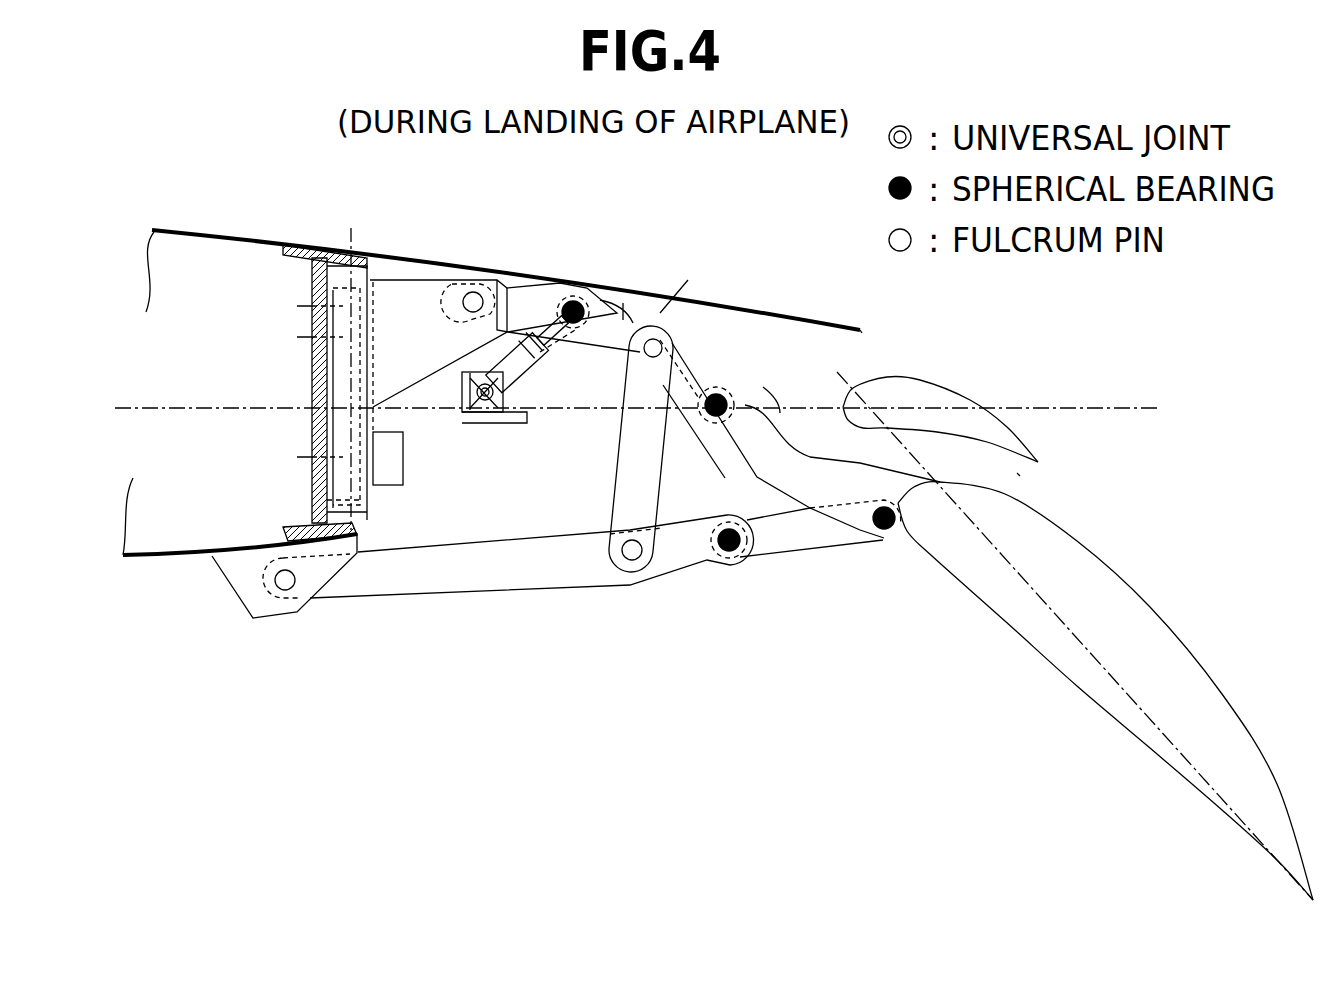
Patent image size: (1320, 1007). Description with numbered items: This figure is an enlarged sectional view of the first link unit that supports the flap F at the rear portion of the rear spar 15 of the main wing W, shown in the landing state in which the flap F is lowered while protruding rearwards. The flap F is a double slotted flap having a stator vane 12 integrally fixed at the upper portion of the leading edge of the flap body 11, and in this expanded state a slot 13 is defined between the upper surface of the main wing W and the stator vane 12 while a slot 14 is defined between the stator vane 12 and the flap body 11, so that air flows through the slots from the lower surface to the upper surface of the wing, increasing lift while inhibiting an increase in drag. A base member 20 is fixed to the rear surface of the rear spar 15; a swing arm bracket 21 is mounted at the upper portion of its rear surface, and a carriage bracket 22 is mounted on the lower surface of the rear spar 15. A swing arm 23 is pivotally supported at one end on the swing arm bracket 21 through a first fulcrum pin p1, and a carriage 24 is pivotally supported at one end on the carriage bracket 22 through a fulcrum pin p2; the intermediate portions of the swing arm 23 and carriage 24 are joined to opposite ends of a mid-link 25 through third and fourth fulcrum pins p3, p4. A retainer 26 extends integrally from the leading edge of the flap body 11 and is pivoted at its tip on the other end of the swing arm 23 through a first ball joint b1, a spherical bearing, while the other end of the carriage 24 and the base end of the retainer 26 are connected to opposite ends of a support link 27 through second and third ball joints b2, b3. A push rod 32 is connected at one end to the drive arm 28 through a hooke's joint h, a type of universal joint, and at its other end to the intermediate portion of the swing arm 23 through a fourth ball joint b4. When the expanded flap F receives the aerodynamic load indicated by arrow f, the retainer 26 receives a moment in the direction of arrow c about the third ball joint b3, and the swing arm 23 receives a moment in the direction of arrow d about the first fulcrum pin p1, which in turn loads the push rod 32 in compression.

The main wing W is at (212, 230).
The flap body 11 is at (1181, 658).
The stator vane 12 is at (947, 397).
The slot 13 is at (850, 352).
The slot 14 is at (1019, 475).
The rear spar 15 is at (312, 365).
The base member 20 is at (312, 428).
The swing arm bracket 21 is at (410, 293).
The carriage bracket 22 is at (240, 573).
The swing arm 23 is at (690, 368).
The carriage 24 is at (474, 585).
The mid-link 25 is at (620, 450).
The retainer 26 is at (821, 453).
The support link 27 is at (795, 538).
The drive arm 28 is at (427, 433).
The push rod 32 is at (497, 338).
The first fulcrum pin p1 is at (474, 292).
The fulcrum pin p2 is at (290, 585).
The third fulcrum pin p3 is at (660, 330).
The fourth fulcrum pin p4 is at (634, 560).
The first ball joint b1 is at (725, 398).
The second ball joint b2 is at (729, 552).
The third ball joint b3 is at (884, 530).
The fourth ball joint b4 is at (576, 300).
The hooke's joint h is at (490, 405).
The arrow c is at (785, 415).
The arrow d is at (626, 302).
The arrow f is at (880, 774).
The flap F is at (1176, 527).